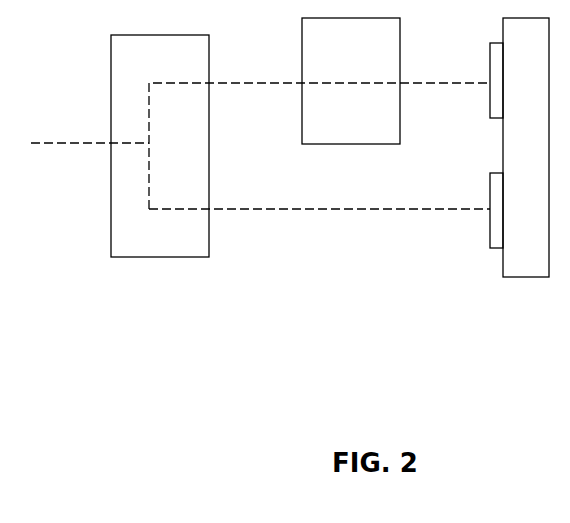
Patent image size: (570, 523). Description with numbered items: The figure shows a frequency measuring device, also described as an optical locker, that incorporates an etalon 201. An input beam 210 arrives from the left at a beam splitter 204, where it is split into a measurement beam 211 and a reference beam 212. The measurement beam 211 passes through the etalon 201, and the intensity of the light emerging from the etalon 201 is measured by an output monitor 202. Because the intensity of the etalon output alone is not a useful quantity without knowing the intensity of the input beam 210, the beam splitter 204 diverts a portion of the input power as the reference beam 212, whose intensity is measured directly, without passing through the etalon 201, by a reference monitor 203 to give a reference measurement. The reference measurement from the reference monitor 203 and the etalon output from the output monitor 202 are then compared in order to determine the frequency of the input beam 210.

The etalon 201 is at (302, 135).
The output monitor 202 is at (490, 240).
The reference monitor 203 is at (490, 45).
The beam splitter 204 is at (111, 72).
The input beam 210 is at (58, 142).
The measurement beam 211 is at (248, 210).
The reference beam 212 is at (245, 83).